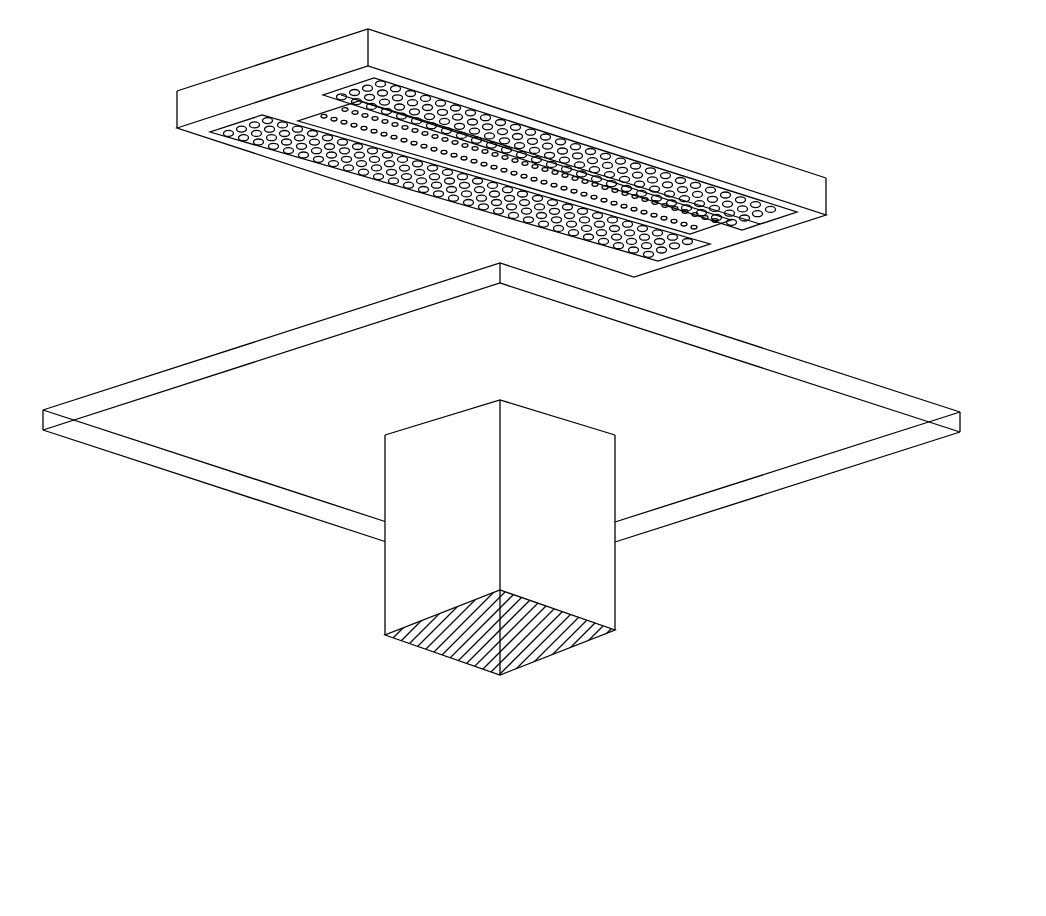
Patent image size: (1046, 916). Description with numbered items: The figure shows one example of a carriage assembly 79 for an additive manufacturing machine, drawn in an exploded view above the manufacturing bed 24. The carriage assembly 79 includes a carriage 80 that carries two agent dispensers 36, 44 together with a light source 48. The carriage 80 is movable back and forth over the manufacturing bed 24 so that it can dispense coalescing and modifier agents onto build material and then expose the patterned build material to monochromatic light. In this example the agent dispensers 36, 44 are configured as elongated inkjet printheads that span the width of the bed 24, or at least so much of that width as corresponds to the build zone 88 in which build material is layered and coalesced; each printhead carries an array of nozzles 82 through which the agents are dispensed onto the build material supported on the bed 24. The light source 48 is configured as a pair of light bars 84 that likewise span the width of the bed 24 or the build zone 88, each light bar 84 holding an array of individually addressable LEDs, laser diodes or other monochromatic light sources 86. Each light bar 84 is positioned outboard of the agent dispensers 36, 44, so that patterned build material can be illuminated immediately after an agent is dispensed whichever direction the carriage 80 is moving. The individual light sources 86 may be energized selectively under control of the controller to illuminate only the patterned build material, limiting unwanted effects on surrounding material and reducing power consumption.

The carriage assembly 79 is at (787, 133).
The carriage 80 is at (813, 195).
The light source 48 is at (852, 221).
The light bar 84 is at (790, 222).
The nozzles 82 is at (322, 108).
The monochromatic light sources 86 is at (460, 197).
The agent dispenser 44 is at (695, 240).
The agent dispenser 36 is at (722, 233).
The build zone 88 is at (138, 326).
The manufacturing bed 24 is at (878, 398).